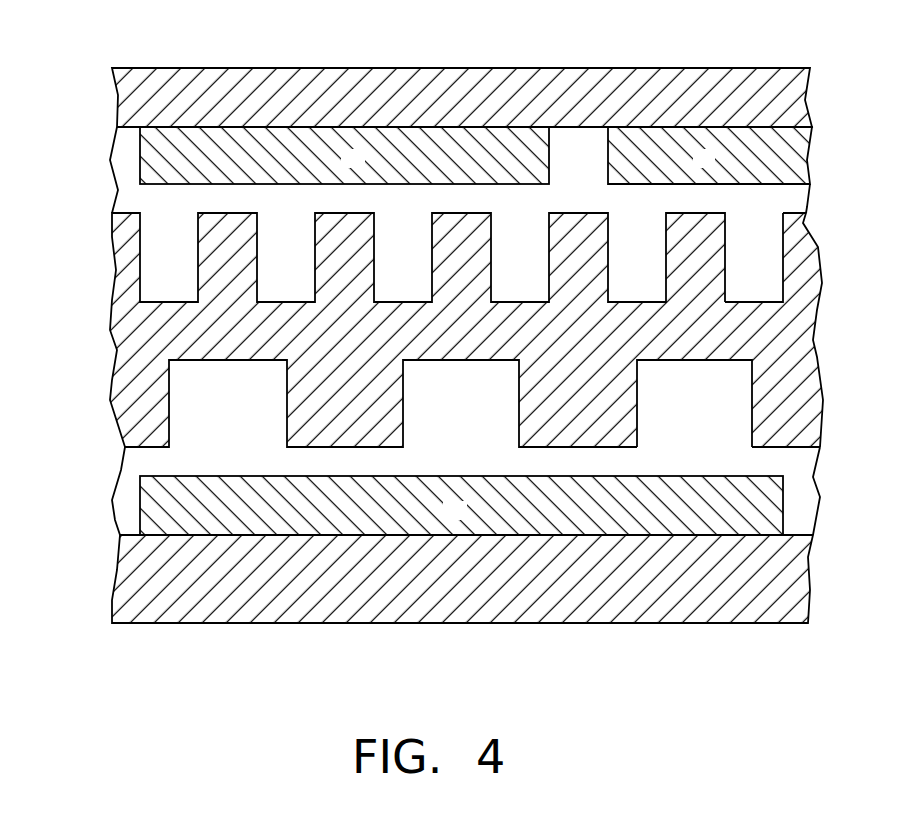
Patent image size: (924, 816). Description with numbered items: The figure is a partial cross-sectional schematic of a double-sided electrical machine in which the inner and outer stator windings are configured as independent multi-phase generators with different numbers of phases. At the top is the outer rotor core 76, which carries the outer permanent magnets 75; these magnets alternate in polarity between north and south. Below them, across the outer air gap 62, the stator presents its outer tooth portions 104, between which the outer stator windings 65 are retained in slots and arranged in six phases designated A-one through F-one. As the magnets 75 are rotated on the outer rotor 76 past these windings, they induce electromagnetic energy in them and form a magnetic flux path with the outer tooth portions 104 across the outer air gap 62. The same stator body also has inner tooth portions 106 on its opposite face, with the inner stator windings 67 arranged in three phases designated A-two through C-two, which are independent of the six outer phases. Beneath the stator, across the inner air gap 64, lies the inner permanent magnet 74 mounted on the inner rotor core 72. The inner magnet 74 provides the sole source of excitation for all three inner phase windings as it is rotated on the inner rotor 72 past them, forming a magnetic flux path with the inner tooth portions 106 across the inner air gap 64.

The outer rotor core 76 is at (455, 67).
The outer permanent magnets 75 is at (140, 145).
The outer air gap 62 is at (112, 201).
The outer stator windings 65 is at (763, 230).
The outer tooth portions 104 is at (798, 247).
The inner tooth portions 106 is at (797, 395).
The inner stator windings 67 is at (732, 432).
The inner air gap 64 is at (116, 461).
The inner permanent magnets 74 is at (775, 502).
The inner rotor core 72 is at (808, 577).